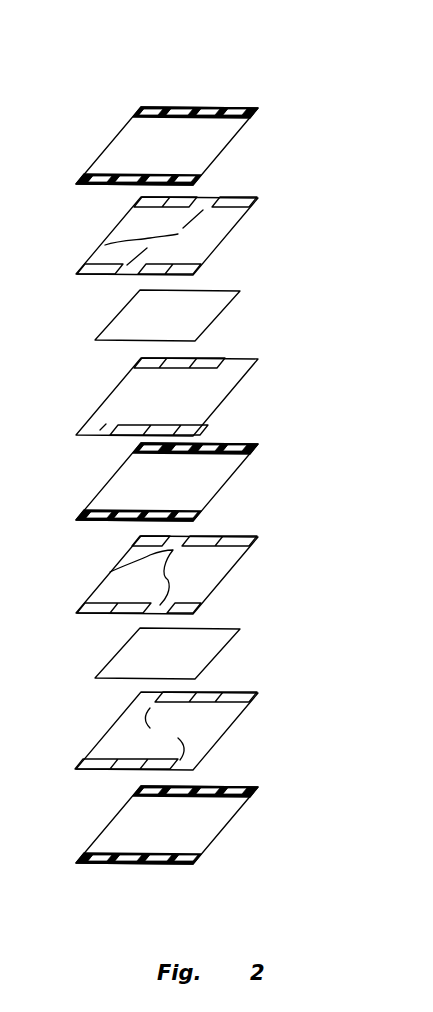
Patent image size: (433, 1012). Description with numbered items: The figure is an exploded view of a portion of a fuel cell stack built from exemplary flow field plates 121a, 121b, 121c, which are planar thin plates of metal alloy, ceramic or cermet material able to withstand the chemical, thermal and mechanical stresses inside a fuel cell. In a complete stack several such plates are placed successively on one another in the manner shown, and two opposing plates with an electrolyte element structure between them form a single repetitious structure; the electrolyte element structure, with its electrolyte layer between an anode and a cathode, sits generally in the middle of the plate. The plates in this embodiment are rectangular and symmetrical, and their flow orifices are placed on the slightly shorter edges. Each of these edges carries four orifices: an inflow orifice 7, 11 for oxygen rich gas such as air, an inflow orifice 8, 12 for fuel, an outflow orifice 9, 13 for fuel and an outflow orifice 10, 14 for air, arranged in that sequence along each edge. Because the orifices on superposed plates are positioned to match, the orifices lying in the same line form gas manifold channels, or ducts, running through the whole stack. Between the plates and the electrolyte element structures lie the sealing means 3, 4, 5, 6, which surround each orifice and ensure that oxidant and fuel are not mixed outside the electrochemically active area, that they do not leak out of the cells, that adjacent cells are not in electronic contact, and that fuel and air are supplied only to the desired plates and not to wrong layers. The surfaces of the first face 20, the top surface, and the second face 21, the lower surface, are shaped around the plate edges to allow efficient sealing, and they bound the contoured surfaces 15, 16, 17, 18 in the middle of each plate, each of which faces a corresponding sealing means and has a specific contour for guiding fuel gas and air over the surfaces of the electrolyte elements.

The flow field plate 121a is at (216, 149).
The sealing means 3 is at (216, 250).
The sealing means 4 is at (218, 405).
The flow field plate 121b is at (215, 484).
The sealing means 5 is at (223, 583).
The sealing means 6 is at (226, 738).
The flow field plate 121c is at (215, 819).
The inflow orifice for oxygen rich gas 7 is at (148, 107).
The inflow orifice for fuel 8 is at (181, 107).
The outflow orifice for fuel 9 is at (211, 107).
The outflow orifice for air 10 is at (234, 107).
The inflow orifice for oxygen rich gas 11 is at (97, 864).
The inflow orifice for fuel 12 is at (127, 865).
The outflow orifice for fuel 13 is at (158, 865).
The outflow orifice for air 14 is at (191, 865).
The contoured surface 15 is at (105, 245).
The contoured surface 16 is at (112, 416).
The contoured surface 17 is at (112, 572).
The contoured surface 18 is at (127, 717).
The first face 20 is at (126, 131).
The second face 21 is at (88, 190).